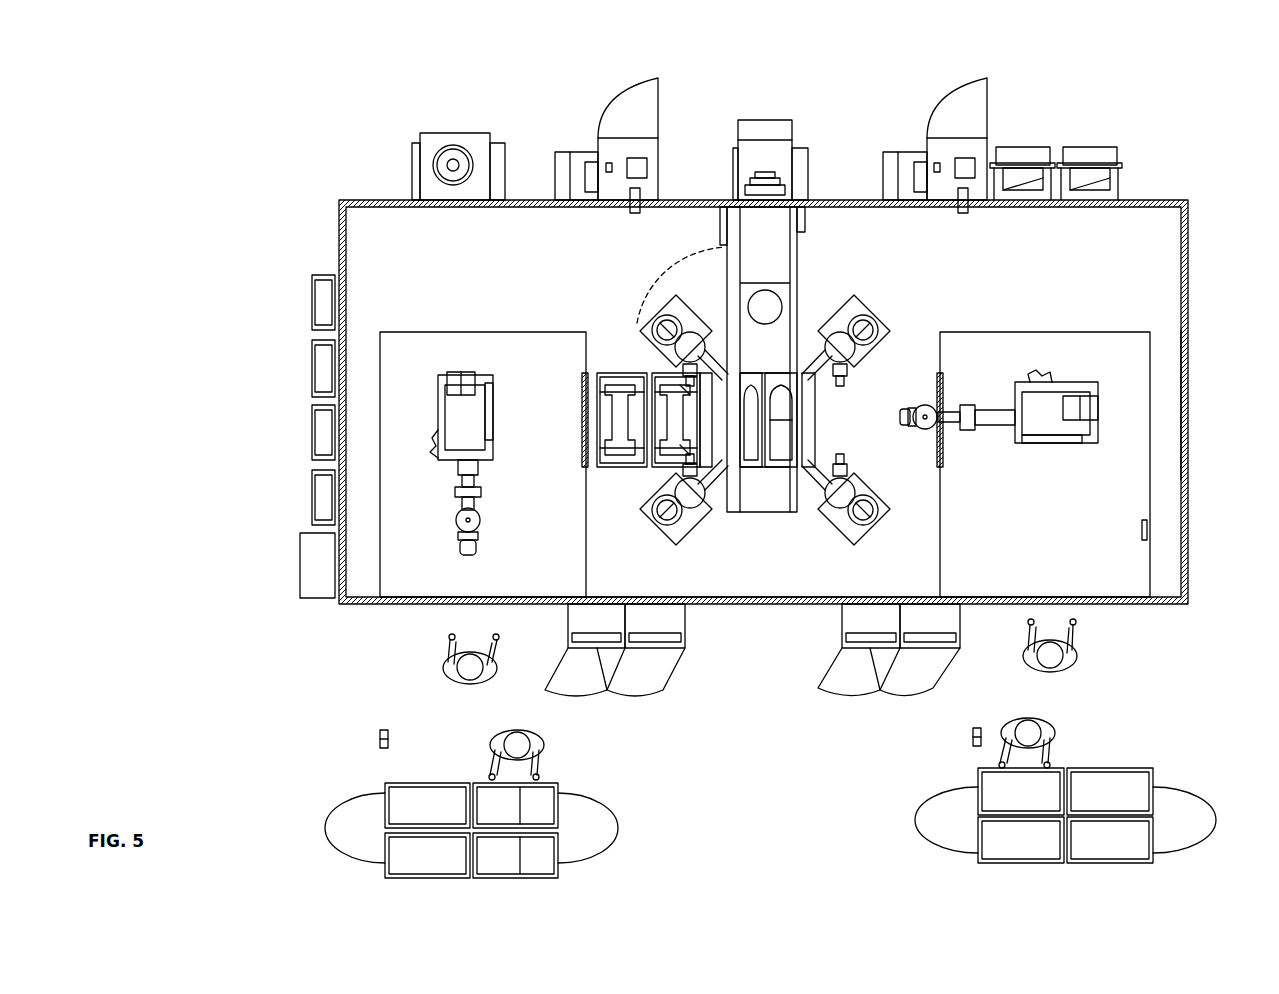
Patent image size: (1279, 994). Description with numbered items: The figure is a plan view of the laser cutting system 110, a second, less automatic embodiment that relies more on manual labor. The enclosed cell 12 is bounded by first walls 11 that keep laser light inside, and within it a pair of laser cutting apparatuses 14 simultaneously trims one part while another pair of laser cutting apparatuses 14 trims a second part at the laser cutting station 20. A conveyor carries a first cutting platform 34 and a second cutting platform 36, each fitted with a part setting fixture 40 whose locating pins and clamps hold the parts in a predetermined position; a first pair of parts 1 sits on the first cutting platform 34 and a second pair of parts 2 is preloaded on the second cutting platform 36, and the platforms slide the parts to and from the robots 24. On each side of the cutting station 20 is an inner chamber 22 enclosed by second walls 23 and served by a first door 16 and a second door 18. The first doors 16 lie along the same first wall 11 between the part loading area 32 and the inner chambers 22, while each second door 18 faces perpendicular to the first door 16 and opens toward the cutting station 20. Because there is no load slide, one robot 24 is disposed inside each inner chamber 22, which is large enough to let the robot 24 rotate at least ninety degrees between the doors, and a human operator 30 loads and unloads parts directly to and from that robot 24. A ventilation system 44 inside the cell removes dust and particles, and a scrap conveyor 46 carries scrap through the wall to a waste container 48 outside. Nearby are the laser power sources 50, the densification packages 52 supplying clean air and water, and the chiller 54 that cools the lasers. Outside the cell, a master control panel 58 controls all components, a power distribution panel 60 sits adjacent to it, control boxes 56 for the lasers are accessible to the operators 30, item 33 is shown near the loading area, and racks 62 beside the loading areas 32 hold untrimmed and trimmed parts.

The laser cutting system 110 is at (1200, 137).
The first walls 11 is at (680, 200).
The enclosed cell 12 is at (1188, 346).
The first door 16 is at (445, 604).
The chiller 54 is at (470, 133).
The laser power sources 50 is at (600, 130).
The waste container 48 is at (793, 130).
The scrap conveyor 46 is at (790, 300).
The densification packages 52 is at (1020, 147).
The ventilation system 44 is at (672, 270).
The laser cutting apparatus 14 is at (680, 340).
The part setting fixture 40 is at (760, 395).
The second pair of parts 2 is at (628, 390).
The second cutting platform 36 is at (660, 458).
The first pair of parts 1 is at (742, 462).
The first cutting platform 34 is at (812, 425).
The laser cutting station 20 is at (820, 400).
The inner chamber 22 is at (380, 562).
The second walls 23 is at (1148, 350).
The second door 18 is at (583, 380).
The robot 24 is at (470, 420).
The power distribution panel 60 is at (310, 300).
The master control panel 58 is at (300, 560).
The control boxes 56 is at (630, 660).
The human operator 30 is at (445, 670).
The part loading area 32 is at (406, 707).
The control box 33 is at (388, 738).
The racks 62 is at (762, 823).